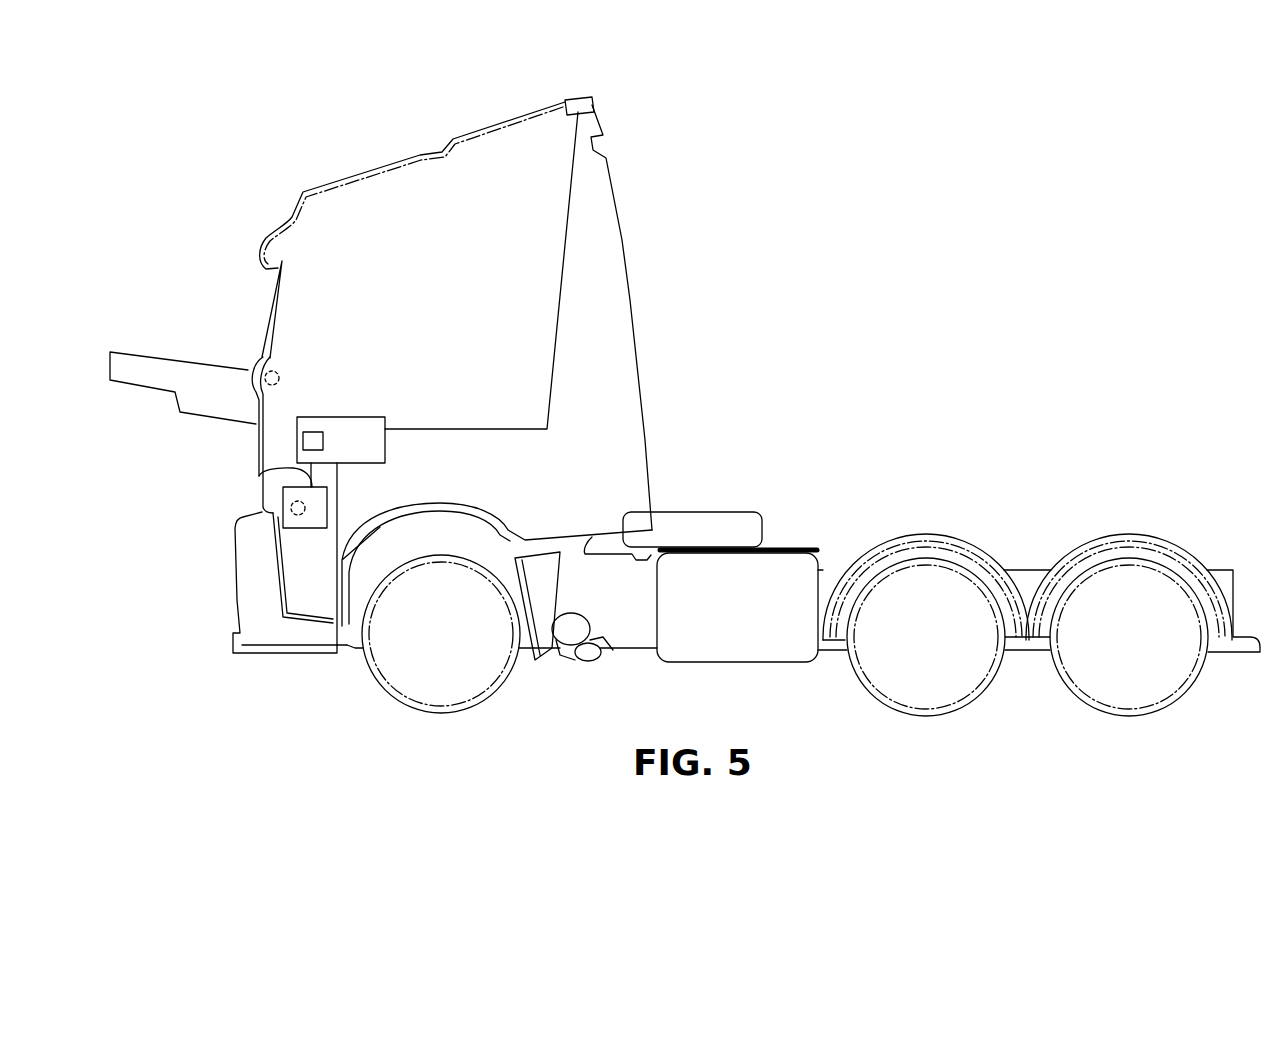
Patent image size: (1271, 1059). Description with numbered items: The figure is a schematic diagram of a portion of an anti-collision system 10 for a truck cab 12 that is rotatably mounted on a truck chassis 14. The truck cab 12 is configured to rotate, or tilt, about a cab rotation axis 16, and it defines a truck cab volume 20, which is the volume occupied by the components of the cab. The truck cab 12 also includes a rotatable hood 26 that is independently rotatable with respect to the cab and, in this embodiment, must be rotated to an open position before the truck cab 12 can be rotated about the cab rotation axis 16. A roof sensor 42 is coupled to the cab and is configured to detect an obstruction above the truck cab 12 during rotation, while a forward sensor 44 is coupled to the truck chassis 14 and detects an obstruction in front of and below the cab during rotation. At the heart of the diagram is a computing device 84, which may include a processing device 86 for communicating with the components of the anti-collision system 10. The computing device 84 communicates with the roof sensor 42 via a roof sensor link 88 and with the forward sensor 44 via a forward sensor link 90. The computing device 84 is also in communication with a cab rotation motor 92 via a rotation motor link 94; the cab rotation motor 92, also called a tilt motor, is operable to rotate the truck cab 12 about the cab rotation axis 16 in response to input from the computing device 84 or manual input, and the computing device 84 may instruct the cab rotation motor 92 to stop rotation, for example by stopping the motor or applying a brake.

The anti-collision system 10 is at (232, 170).
The truck cab 12 is at (649, 280).
The truck chassis 14 is at (851, 521).
The cab rotation axis 16 is at (291, 508).
The truck cab volume 20 is at (637, 347).
The rotatable hood 26 is at (155, 355).
The roof sensor 42 is at (590, 98).
The forward sensor 44 is at (233, 652).
The computing device 84 is at (378, 446).
The processing device 86 is at (333, 417).
The roof sensor link 88 is at (450, 428).
The forward sensor link 90 is at (338, 518).
The cab rotation motor 92 is at (307, 530).
The rotation motor link 94 is at (260, 480).